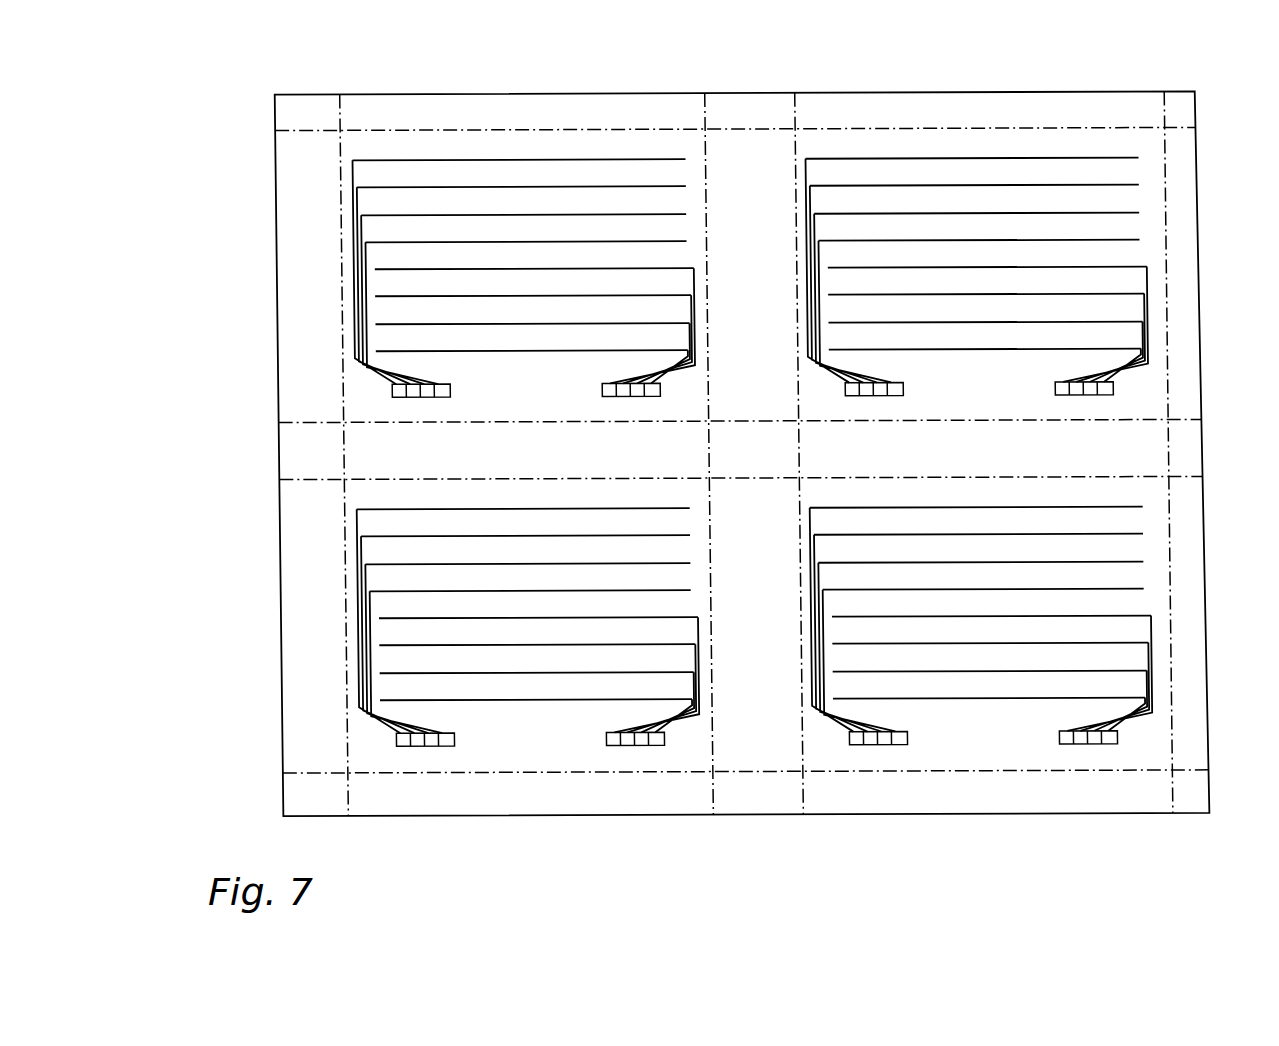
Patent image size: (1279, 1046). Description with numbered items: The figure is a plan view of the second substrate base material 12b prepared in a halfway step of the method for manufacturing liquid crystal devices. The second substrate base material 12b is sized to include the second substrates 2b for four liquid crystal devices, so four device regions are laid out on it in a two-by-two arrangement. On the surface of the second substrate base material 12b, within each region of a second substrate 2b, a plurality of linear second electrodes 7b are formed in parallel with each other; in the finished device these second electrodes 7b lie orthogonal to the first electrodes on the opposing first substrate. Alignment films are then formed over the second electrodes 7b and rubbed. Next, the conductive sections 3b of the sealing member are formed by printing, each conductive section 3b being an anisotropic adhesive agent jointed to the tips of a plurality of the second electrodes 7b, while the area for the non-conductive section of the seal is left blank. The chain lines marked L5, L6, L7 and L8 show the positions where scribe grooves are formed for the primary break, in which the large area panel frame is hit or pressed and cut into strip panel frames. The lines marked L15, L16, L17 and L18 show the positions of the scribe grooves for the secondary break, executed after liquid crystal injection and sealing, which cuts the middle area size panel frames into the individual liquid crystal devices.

The second substrate base material 12b is at (304, 111).
The second substrate 2b is at (698, 157).
The second electrodes 7b is at (528, 268).
The conductive sections 3b is at (451, 387).
The scribe groove position L5 is at (346, 112).
The scribe groove position L6 is at (711, 112).
The scribe groove position L7 is at (801, 112).
The scribe groove position L8 is at (1168, 105).
The scribe groove position L15 is at (1180, 130).
The scribe groove position L16 is at (1174, 421).
The scribe groove position L17 is at (1174, 478).
The scribe groove position L18 is at (1179, 772).